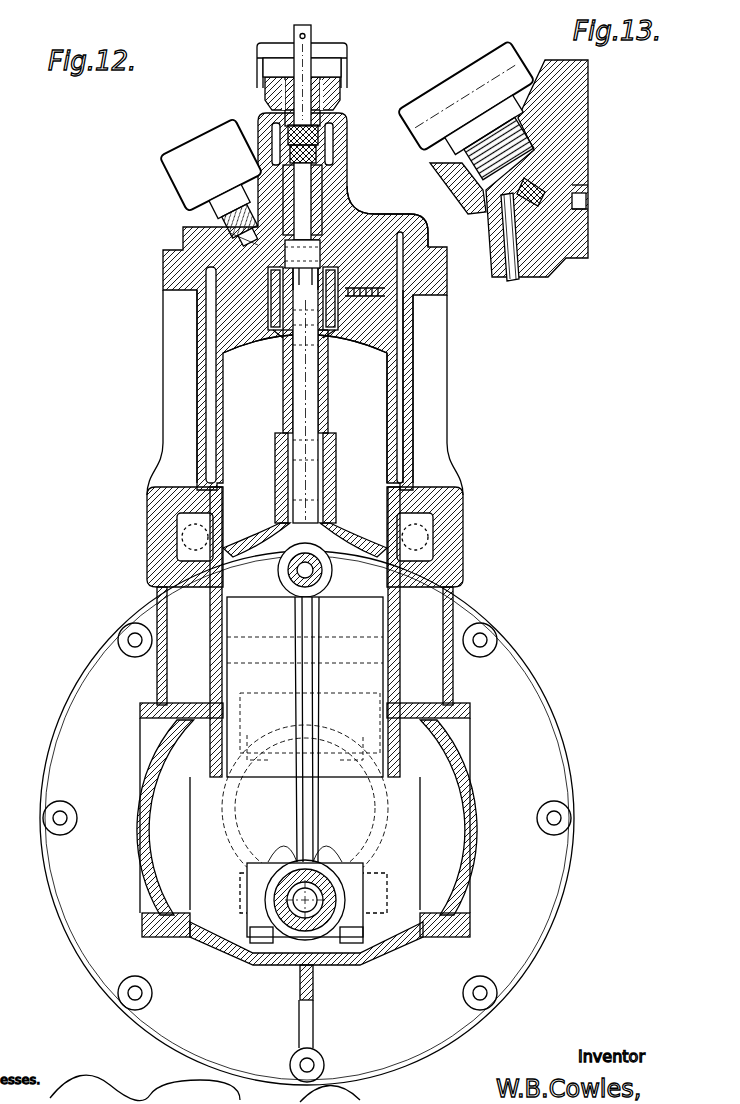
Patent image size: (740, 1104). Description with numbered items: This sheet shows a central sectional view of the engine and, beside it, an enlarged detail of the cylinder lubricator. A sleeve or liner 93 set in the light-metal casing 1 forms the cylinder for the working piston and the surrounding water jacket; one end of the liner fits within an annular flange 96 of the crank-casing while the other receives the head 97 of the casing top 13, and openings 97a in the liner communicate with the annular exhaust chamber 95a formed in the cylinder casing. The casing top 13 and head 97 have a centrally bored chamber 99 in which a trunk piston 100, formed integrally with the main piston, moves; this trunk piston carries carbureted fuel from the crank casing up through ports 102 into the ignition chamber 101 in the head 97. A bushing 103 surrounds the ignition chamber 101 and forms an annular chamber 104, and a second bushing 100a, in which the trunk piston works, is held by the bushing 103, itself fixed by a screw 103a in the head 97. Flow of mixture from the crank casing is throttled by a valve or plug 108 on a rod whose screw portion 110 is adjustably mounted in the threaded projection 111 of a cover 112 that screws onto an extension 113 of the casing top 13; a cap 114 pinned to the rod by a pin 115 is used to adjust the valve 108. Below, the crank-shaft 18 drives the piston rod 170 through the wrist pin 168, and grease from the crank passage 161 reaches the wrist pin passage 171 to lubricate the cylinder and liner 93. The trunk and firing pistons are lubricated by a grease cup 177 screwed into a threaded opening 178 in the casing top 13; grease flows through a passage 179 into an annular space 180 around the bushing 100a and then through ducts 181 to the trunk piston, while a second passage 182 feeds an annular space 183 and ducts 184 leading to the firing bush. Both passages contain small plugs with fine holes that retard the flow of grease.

In FIG. 12, the casing 1 is at (415, 368).
In FIG. 13, the casing top 13 is at (509, 168).
In FIG. 12, the crank-shaft 18 is at (298, 920).
In FIG. 12, the sleeve or liner 93 is at (396, 398).
In FIG. 12, the annular exhaust chamber 95a is at (433, 532).
In FIG. 12, the annular flange 96 is at (400, 660).
In FIG. 12, the head 97 is at (240, 318).
In FIG. 12, the openings 97a is at (420, 498).
In FIG. 12, the centrally bored chamber 99 is at (289, 180).
In FIG. 12, the trunk piston 100 is at (284, 412).
In FIG. 12, the second bushing 100a is at (338, 254).
In FIG. 12, the ignition chamber 101 is at (305, 350).
In FIG. 12, the ports 102 is at (302, 254).
In FIG. 12, the bushing 103 is at (330, 340).
In FIG. 12, the screw 103a is at (413, 252).
In FIG. 12, the annular chamber 104 is at (250, 282).
In FIG. 12, the valve or plug 108 is at (337, 228).
In FIG. 12, the screw portion 110 is at (312, 136).
In FIG. 12, the projection 111 is at (318, 154).
In FIG. 12, the cover 112 is at (323, 83).
In FIG. 12, the extension 113 is at (266, 95).
In FIG. 12, the cap 114 is at (262, 52).
In FIG. 12, the pin 115 is at (313, 38).
In FIG. 12, the crank passage 161 is at (327, 890).
In FIG. 12, the wrist pin 168 is at (327, 572).
In FIG. 12, the piston rod 170 is at (296, 678).
In FIG. 12, the passage 171 is at (302, 568).
In FIG. 12, the grease cup 177 is at (185, 178).
In FIG. 13, the grease cup 177 is at (465, 84).
In FIG. 12, the threaded opening 178 is at (200, 234).
In FIG. 13, the threaded opening 178 is at (555, 138).
In FIG. 13, the passage 179 is at (590, 184).
In FIG. 13, the annular space 180 is at (590, 195).
In FIG. 13, the ducts 181 is at (590, 208).
In FIG. 13, the second passage 182 is at (520, 258).
In FIG. 12, the annular space 183 is at (410, 326).
In FIG. 12, the ducts 184 is at (338, 286).